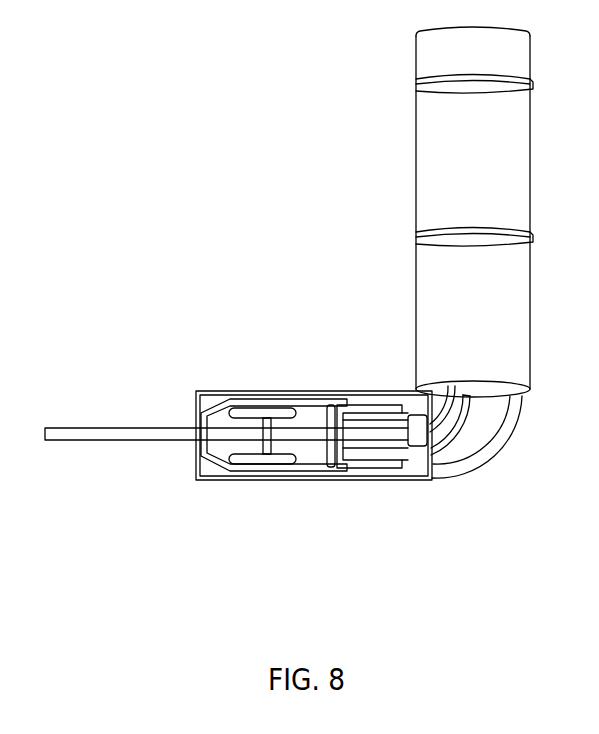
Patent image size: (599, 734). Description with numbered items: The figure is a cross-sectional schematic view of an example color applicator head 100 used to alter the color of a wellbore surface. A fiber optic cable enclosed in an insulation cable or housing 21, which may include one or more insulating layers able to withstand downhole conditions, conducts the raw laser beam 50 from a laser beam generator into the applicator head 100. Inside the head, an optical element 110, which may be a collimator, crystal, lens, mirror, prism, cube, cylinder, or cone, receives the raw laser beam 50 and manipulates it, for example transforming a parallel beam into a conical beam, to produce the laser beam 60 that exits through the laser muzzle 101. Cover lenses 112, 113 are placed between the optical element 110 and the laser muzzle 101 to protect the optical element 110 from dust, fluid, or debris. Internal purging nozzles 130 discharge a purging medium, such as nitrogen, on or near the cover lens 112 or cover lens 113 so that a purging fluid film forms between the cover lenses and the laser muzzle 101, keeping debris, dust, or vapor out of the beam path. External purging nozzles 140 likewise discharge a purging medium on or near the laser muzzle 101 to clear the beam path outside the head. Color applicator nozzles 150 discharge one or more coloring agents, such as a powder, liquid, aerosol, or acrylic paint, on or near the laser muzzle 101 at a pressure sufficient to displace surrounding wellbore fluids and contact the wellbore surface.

The insulation cable or housing 21 is at (415, 52).
The raw laser beam 50 is at (462, 430).
The laser beam 60 is at (93, 442).
The color applicator head 100 is at (352, 390).
The laser muzzle 101 is at (200, 413).
The optical element 110 is at (418, 447).
The cover lens 112 is at (330, 467).
The cover lens 113 is at (267, 455).
The internal purging nozzles 130 is at (355, 408).
The external purging nozzles 140 is at (236, 457).
The color applicator nozzles 150 is at (247, 407).